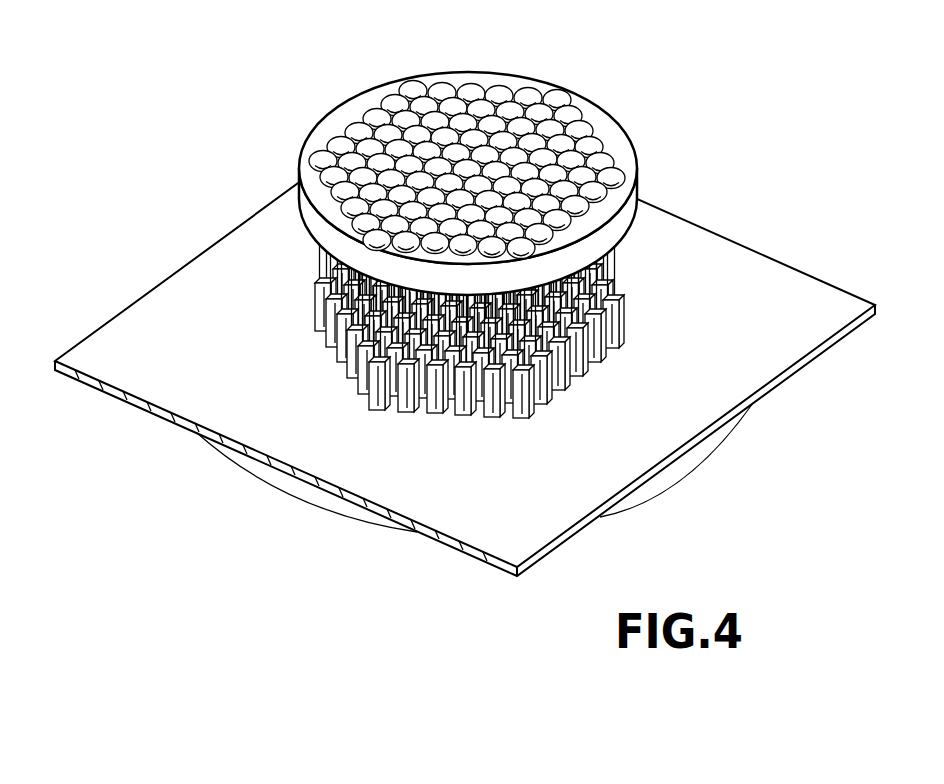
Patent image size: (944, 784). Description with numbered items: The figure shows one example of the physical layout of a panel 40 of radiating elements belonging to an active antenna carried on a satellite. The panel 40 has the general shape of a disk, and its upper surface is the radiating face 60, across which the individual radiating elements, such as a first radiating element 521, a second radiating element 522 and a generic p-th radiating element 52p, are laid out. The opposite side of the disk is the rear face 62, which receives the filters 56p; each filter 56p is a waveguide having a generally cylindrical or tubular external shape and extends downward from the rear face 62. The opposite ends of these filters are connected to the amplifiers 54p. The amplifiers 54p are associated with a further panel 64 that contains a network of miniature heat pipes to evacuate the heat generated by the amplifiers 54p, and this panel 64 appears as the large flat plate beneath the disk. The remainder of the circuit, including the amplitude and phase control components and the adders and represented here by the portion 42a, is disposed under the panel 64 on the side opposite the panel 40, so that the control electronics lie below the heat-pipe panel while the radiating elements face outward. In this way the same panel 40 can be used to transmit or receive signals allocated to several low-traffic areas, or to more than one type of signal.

The panel of radiating elements 40 is at (472, 151).
The circular area on substrate 42a is at (317, 498).
The radiating element 521 is at (412, 86).
The radiating element 522 is at (443, 88).
The radiating element 52p is at (505, 330).
The amplifier 54p is at (522, 393).
The filter 56p is at (518, 338).
The radiating face 60 is at (601, 116).
The rear face 62 is at (307, 252).
The panel containing heat pipes 64 is at (98, 359).